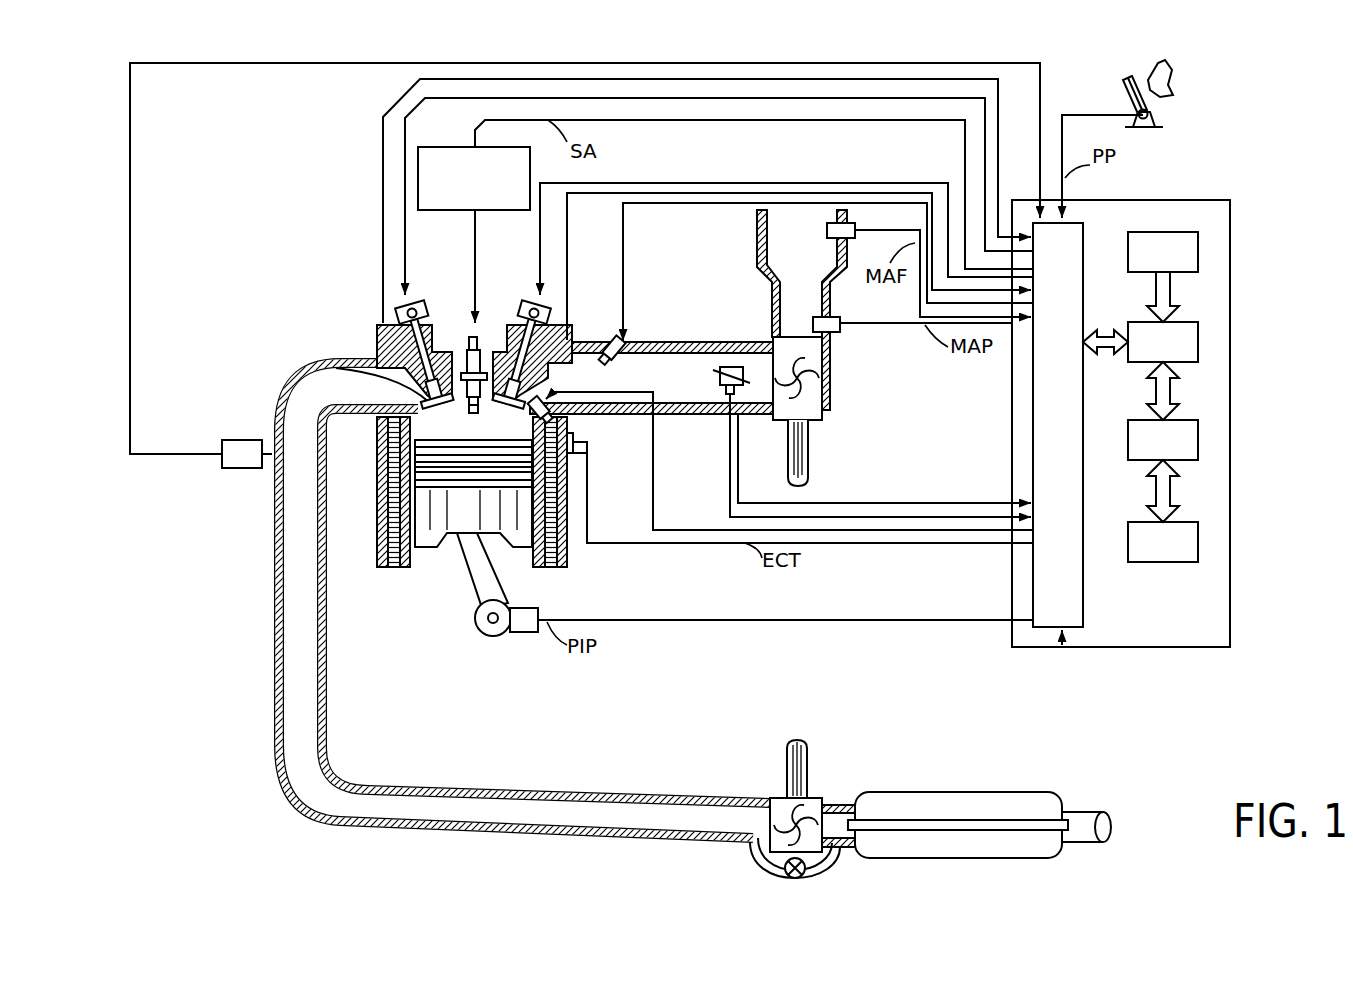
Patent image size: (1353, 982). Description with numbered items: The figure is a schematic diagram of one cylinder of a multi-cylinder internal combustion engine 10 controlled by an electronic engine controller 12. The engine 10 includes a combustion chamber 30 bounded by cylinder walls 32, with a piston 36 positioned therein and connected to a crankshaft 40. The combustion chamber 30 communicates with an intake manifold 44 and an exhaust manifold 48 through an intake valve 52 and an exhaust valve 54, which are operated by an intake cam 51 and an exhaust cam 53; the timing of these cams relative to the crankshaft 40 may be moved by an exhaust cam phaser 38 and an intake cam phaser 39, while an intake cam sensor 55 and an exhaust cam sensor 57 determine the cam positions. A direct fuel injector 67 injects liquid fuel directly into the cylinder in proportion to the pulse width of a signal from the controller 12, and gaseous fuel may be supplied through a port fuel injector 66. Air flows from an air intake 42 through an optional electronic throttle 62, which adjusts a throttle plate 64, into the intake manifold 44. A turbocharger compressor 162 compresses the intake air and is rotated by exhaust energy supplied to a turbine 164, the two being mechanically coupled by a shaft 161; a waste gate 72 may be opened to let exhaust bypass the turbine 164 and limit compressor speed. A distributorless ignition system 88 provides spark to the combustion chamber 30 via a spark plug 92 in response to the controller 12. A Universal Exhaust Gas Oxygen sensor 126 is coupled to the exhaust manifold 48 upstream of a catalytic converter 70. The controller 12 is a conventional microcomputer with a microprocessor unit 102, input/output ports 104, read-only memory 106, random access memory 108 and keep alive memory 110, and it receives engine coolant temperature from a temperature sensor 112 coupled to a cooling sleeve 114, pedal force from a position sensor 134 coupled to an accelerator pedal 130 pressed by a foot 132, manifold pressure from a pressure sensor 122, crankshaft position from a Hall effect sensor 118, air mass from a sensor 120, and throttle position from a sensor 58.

The internal combustion engine 10 is at (313, 281).
The electronic engine controller 12 is at (1222, 200).
The combustion chamber 30 is at (470, 422).
The cylinder walls 32 is at (417, 560).
The piston 36 is at (457, 520).
The exhaust cam phaser 38 is at (423, 305).
The intake cam phaser 39 is at (523, 325).
The crankshaft 40 is at (485, 633).
The air intake 42 is at (802, 310).
The intake manifold 44 is at (651, 378).
The exhaust manifold 48 is at (516, 600).
The intake cam 51 is at (527, 298).
The intake valve 52 is at (548, 397).
The exhaust cam 53 is at (415, 300).
The exhaust valve 54 is at (375, 357).
The intake cam sensor 55 is at (560, 318).
The exhaust cam sensor 57 is at (390, 308).
The throttle position sensor 58 is at (725, 392).
The electronic throttle 62 is at (722, 366).
The throttle plate 64 is at (718, 372).
The port fuel injector 66 is at (617, 337).
The direct fuel injector 67 is at (577, 420).
The catalytic converter 70 is at (867, 792).
The waste gate 72 is at (782, 877).
The distributorless ignition system 88 is at (430, 147).
The spark plug 92 is at (478, 337).
The microprocessor unit 102 is at (1198, 340).
The input/output ports 104 is at (1085, 230).
The read-only memory 106 is at (1198, 250).
The random access memory 108 is at (1198, 440).
The keep alive memory 110 is at (1198, 540).
The temperature sensor 112 is at (583, 452).
The cooling sleeve 114 is at (558, 567).
The Hall effect sensor 118 is at (518, 633).
The air mass sensor 120 is at (855, 225).
The pressure sensor 122 is at (840, 330).
The Universal Exhaust Gas Oxygen sensor 126 is at (222, 446).
The accelerator pedal 130 is at (1178, 130).
The foot 132 is at (1175, 78).
The position sensor 134 is at (1165, 115).
The shaft 161 is at (788, 437).
The turbocharger compressor 162 is at (772, 332).
The turbine 164 is at (777, 798).